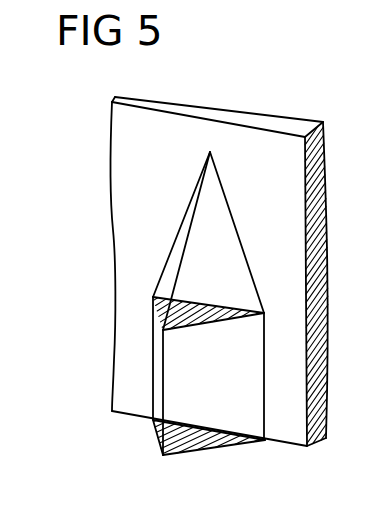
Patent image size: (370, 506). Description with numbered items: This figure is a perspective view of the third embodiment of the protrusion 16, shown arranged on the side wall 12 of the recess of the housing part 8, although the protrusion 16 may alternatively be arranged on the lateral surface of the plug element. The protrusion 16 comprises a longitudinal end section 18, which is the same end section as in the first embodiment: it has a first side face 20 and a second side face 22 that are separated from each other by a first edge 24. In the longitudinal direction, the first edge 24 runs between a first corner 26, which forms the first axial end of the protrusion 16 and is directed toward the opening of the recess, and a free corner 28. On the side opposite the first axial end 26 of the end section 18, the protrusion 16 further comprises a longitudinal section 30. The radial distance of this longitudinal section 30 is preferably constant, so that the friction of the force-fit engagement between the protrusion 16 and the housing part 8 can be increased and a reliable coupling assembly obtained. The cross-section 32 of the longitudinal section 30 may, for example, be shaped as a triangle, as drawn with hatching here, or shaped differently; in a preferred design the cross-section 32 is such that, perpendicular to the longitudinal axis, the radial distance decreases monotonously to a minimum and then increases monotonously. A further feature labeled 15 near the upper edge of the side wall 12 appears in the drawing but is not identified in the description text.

The housing part 8 is at (279, 123).
The side wall 12 is at (133, 153).
The upper edge 15 is at (146, 96).
The protrusion 16 is at (183, 357).
The longitudinal end section 18 is at (227, 200).
The first side face 20 is at (170, 258).
The second side face 22 is at (232, 247).
The first edge 24 is at (184, 230).
The first corner 26 is at (210, 152).
The free corner 28 is at (160, 330).
The longitudinal section 30 is at (238, 350).
The cross-section 32 is at (217, 308).